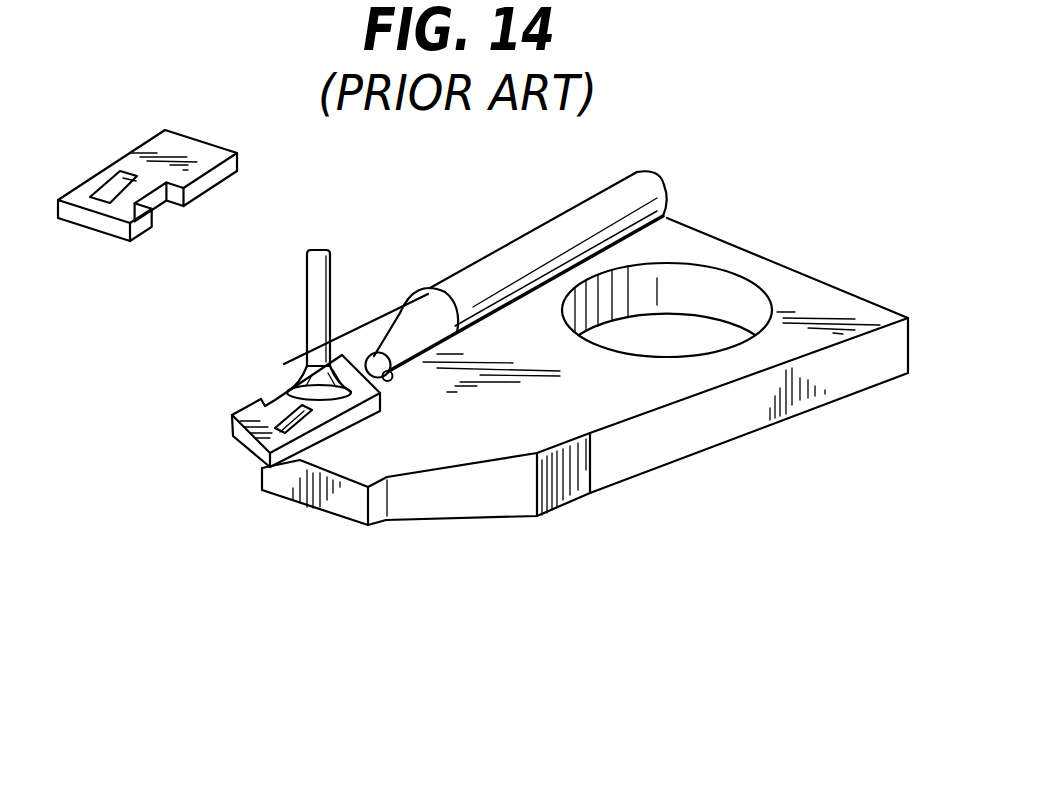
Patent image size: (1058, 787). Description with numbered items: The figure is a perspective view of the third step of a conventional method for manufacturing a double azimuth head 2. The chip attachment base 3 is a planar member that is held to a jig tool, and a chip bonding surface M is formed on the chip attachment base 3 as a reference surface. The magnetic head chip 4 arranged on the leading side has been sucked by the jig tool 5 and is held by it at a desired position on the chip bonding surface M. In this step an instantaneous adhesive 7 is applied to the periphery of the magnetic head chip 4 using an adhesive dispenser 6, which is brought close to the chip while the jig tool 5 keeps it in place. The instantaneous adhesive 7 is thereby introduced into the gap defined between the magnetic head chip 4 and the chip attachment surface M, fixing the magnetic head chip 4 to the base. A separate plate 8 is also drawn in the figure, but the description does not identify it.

The double azimuth head 2 is at (250, 498).
The chip attachment base 3 is at (697, 432).
The magnetic head chip 4 is at (253, 412).
The jig tool 5 is at (331, 285).
The adhesive dispenser 6 is at (508, 268).
The instantaneous adhesive 7 is at (392, 380).
The clamp plate 8 is at (112, 220).
The chip bonding surface M is at (565, 419).